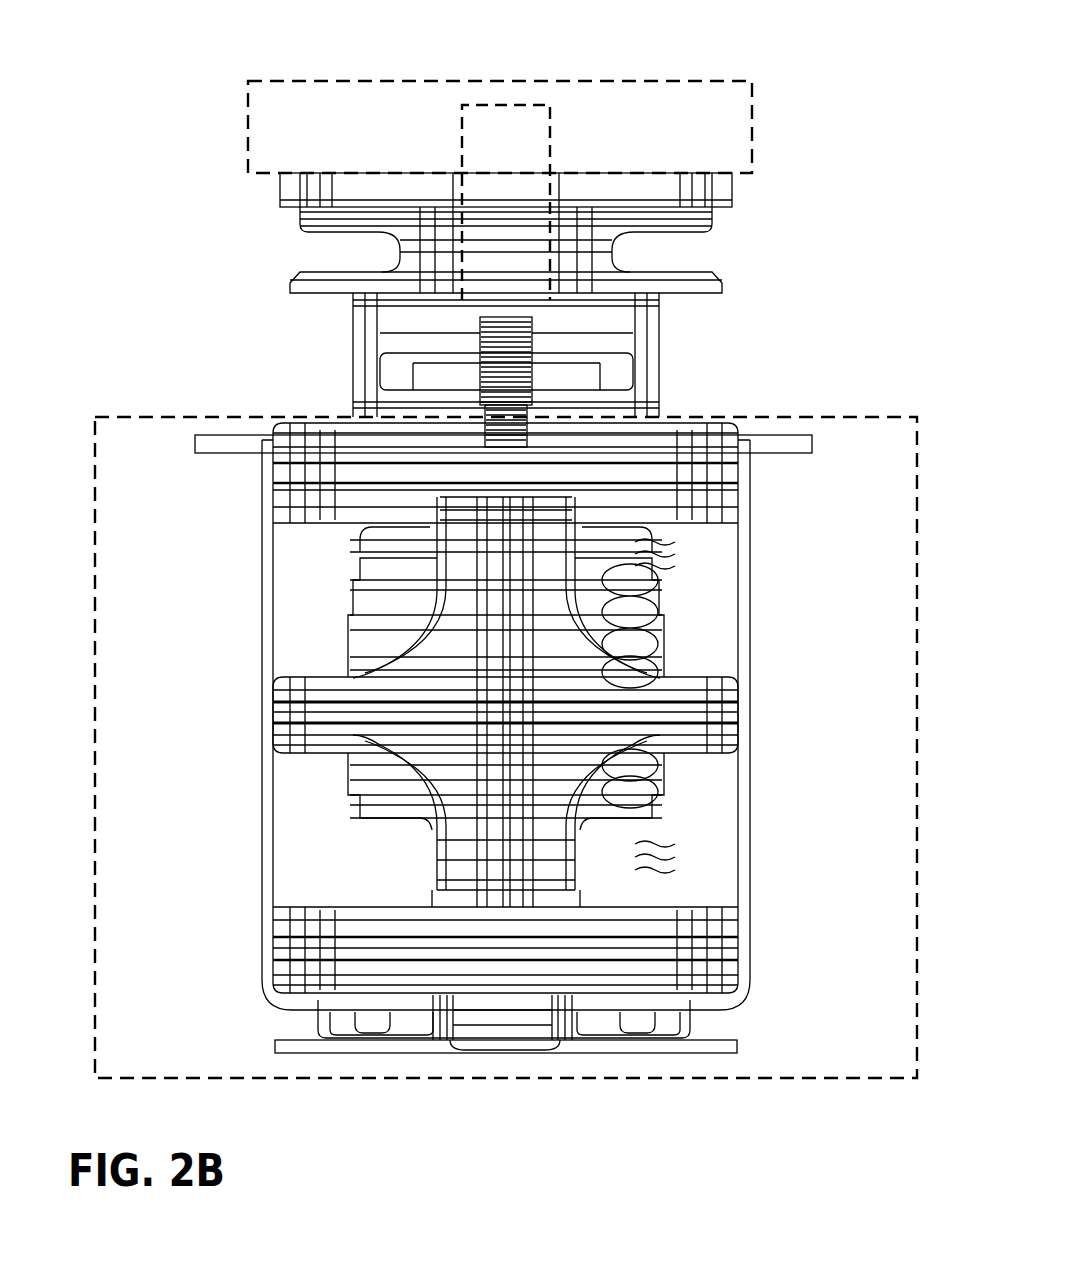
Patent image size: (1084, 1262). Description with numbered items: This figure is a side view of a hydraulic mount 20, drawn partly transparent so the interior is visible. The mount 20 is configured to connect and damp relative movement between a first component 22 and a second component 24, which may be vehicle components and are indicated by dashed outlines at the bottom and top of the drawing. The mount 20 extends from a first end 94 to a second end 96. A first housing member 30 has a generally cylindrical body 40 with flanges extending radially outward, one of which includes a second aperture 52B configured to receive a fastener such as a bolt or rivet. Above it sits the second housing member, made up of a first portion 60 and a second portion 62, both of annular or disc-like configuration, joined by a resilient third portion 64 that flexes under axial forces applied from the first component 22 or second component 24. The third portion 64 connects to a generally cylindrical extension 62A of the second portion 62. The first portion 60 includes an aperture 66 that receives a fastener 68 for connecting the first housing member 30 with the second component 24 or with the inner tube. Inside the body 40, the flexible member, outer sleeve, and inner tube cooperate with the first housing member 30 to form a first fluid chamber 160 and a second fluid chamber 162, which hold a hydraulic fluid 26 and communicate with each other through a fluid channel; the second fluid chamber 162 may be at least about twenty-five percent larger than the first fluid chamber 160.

The mount 20 is at (340, 43).
The first component 22 is at (917, 739).
The second component 24 is at (752, 140).
The fluid 26 is at (676, 574).
The first housing member 30 is at (771, 935).
The body 40 is at (260, 798).
The second aperture 52B is at (480, 333).
The first portion 60 is at (718, 190).
The second portion 62 is at (793, 443).
The extension 62A is at (658, 340).
The third portion 64 is at (683, 243).
The aperture 66 is at (453, 192).
The fastener 68 is at (485, 135).
The first end 94 is at (213, 253).
The second end 96 is at (190, 1050).
The first fluid chamber 160 is at (308, 562).
The second fluid chamber 162 is at (308, 882).